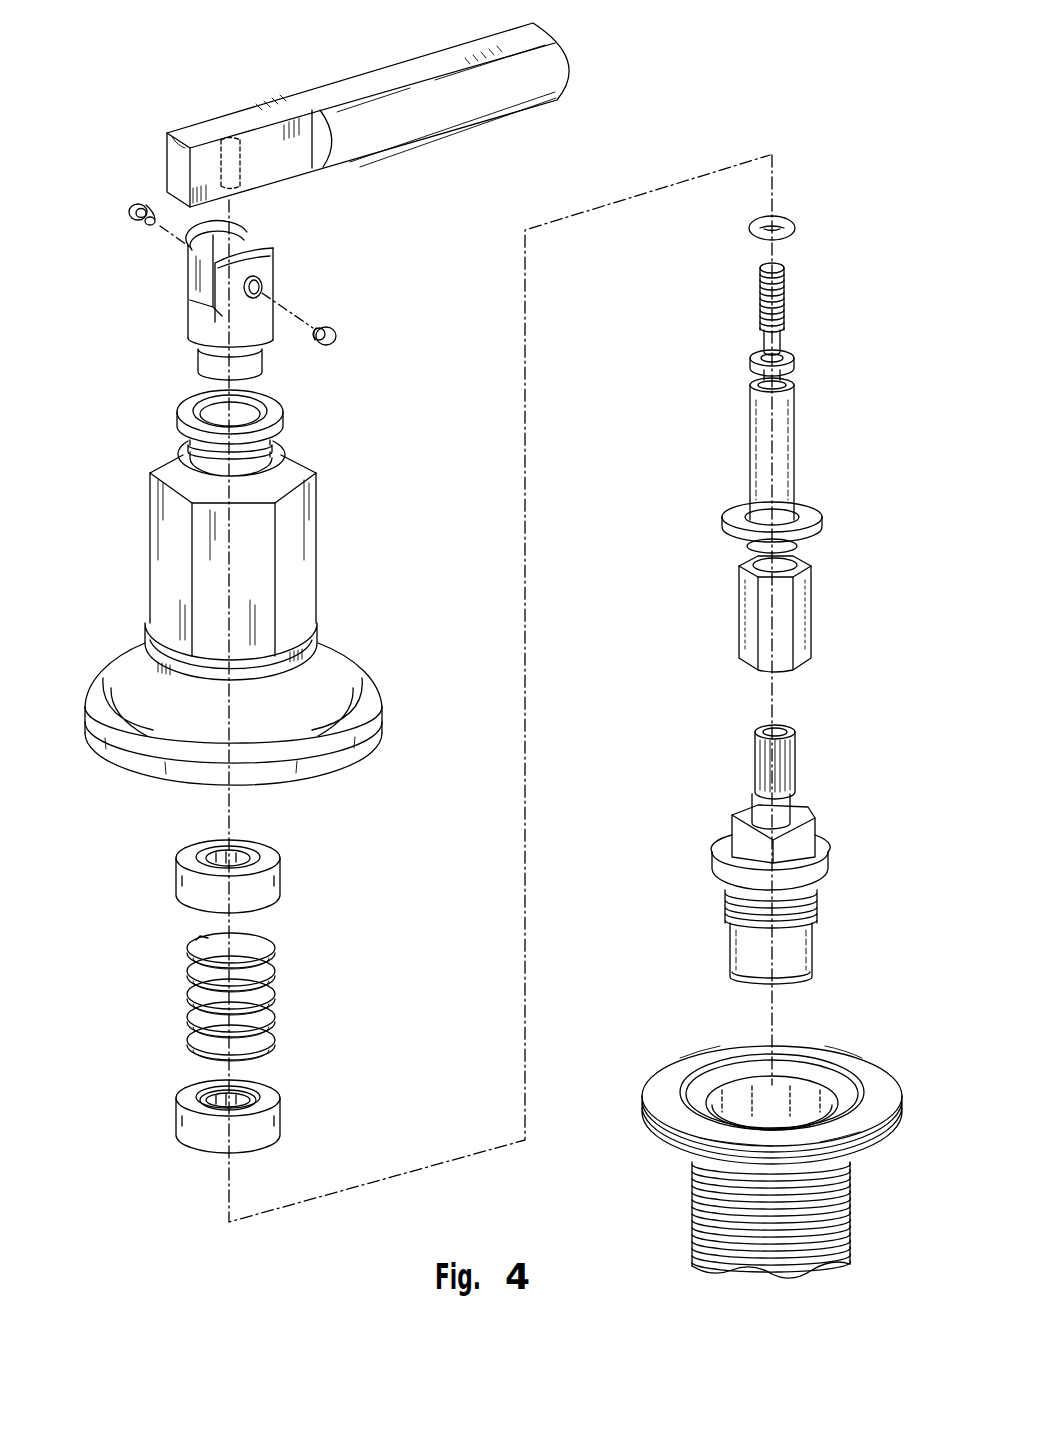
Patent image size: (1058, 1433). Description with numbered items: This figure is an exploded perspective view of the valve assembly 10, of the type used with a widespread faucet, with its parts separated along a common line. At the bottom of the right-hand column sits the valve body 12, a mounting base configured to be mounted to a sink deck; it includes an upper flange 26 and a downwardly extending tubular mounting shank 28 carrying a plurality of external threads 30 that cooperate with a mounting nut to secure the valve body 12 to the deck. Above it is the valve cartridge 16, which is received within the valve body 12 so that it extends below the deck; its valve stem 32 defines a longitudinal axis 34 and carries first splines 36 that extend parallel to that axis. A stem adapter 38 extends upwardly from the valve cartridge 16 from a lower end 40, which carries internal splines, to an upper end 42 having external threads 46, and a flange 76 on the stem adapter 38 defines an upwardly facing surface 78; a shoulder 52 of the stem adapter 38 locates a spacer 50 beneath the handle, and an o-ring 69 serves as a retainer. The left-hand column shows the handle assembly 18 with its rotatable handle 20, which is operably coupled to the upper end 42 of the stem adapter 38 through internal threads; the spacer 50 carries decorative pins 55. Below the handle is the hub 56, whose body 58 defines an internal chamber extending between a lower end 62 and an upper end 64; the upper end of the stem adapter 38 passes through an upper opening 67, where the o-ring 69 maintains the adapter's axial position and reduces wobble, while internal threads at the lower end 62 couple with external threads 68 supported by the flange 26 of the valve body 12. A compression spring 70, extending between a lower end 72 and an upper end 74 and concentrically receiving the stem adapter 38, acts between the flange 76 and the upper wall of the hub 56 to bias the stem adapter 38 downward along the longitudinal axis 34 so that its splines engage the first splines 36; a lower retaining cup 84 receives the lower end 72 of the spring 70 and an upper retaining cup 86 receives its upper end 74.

The valve assembly 10 is at (800, 100).
The valve body 12 is at (761, 1108).
The valve cartridge 16 is at (738, 822).
The handle assembly 18 is at (115, 103).
The handle 20 is at (240, 118).
The upper flange 26 is at (818, 1053).
The mounting shank 28 is at (764, 1220).
The external threads 30 is at (693, 1218).
The valve stem 32 is at (828, 729).
The longitudinal axis 34 is at (765, 1020).
The first splines 36 is at (795, 768).
The stem adapter 38 is at (775, 473).
The lower end 40 is at (745, 610).
The upper end 42 is at (775, 309).
The external threads 46 is at (758, 310).
The spacer 50 is at (200, 332).
The shoulder 52 is at (750, 372).
The decorative pins 55 is at (128, 214).
The hub 56 is at (266, 574).
The body 58 is at (163, 566).
The lower end 62 is at (368, 730).
The upper end 64 is at (237, 419).
The upper opening 67 is at (250, 405).
The external threads 68 is at (642, 1122).
The o-ring 69 is at (793, 228).
The spring 70 is at (241, 996).
The lower end 72 is at (262, 1058).
The upper end 74 is at (200, 938).
The flange 76 is at (775, 524).
The upwardly facing surface 78 is at (810, 508).
The lower retaining cup 84 is at (182, 1121).
The upper retaining cup 86 is at (180, 882).